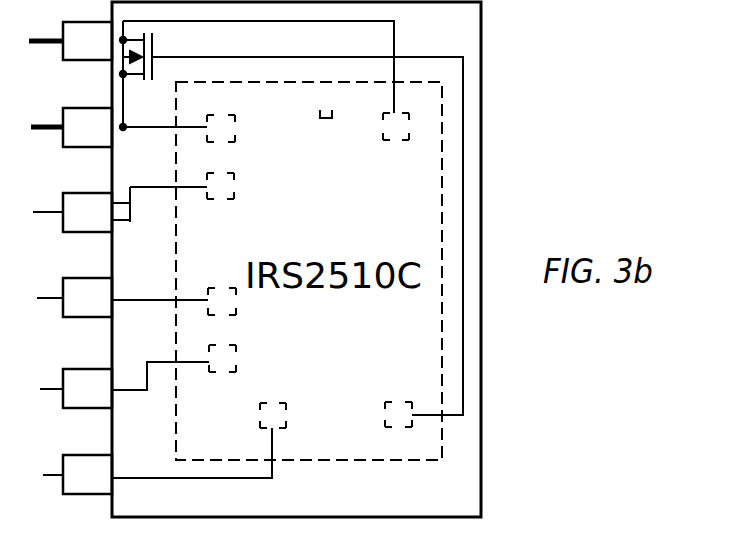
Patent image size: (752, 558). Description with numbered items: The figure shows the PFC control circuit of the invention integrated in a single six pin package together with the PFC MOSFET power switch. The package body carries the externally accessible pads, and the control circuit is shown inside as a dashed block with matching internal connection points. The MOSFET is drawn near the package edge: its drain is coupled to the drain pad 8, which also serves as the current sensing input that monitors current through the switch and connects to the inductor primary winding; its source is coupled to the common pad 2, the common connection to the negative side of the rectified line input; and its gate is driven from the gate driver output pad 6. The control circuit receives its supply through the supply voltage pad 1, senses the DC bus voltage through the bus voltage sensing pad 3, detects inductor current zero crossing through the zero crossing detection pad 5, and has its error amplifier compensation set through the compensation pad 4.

The DRAIN pad 8 is at (219, 82).
The COM pad 2 is at (133, 141).
The VCC pad 1 is at (133, 217).
The ZX pad 5 is at (136, 312).
The VBUS pad 3 is at (138, 394).
The COMP pad 4 is at (164, 461).
The PFC pad 6 is at (398, 415).